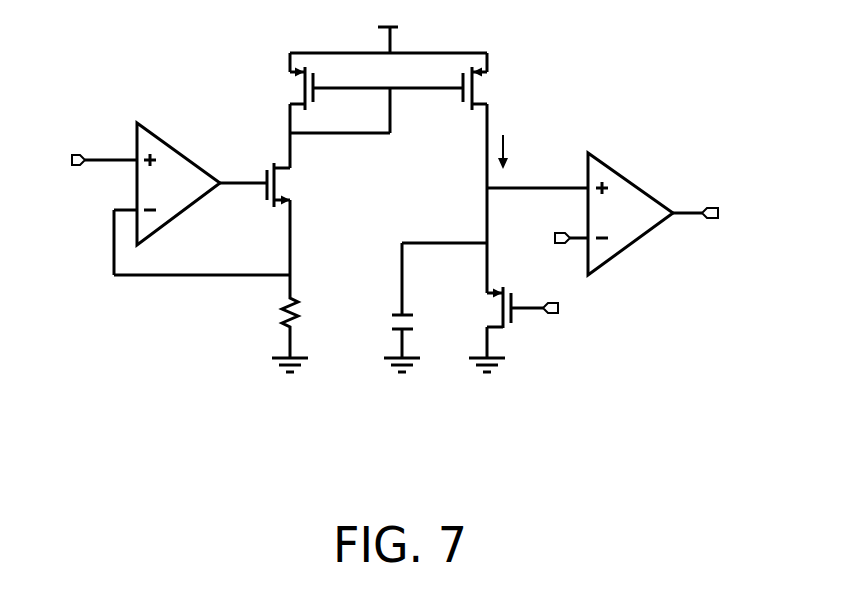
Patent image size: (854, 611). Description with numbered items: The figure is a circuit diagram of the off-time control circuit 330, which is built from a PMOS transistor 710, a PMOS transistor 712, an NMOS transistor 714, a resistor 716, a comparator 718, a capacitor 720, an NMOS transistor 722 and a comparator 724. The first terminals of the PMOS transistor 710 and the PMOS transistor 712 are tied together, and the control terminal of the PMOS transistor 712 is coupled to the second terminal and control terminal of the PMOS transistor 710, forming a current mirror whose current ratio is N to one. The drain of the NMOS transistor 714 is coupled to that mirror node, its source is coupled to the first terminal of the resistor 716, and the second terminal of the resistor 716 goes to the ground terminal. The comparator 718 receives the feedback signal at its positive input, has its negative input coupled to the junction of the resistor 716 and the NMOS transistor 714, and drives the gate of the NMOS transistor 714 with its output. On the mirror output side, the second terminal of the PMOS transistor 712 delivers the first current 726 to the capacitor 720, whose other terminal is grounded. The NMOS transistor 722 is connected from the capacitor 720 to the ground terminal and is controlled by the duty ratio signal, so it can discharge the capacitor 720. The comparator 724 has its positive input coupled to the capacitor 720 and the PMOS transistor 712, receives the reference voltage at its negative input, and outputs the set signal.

The off-time control circuit 330 is at (730, 458).
The PMOS transistor 710 is at (292, 88).
The PMOS transistor 712 is at (489, 88).
The NMOS transistor 714 is at (282, 184).
The resistor 716 is at (284, 308).
The comparator 718 is at (185, 157).
The capacitor 720 is at (392, 323).
The NMOS transistor 722 is at (495, 308).
The comparator 724 is at (637, 185).
The first current 726 is at (505, 150).